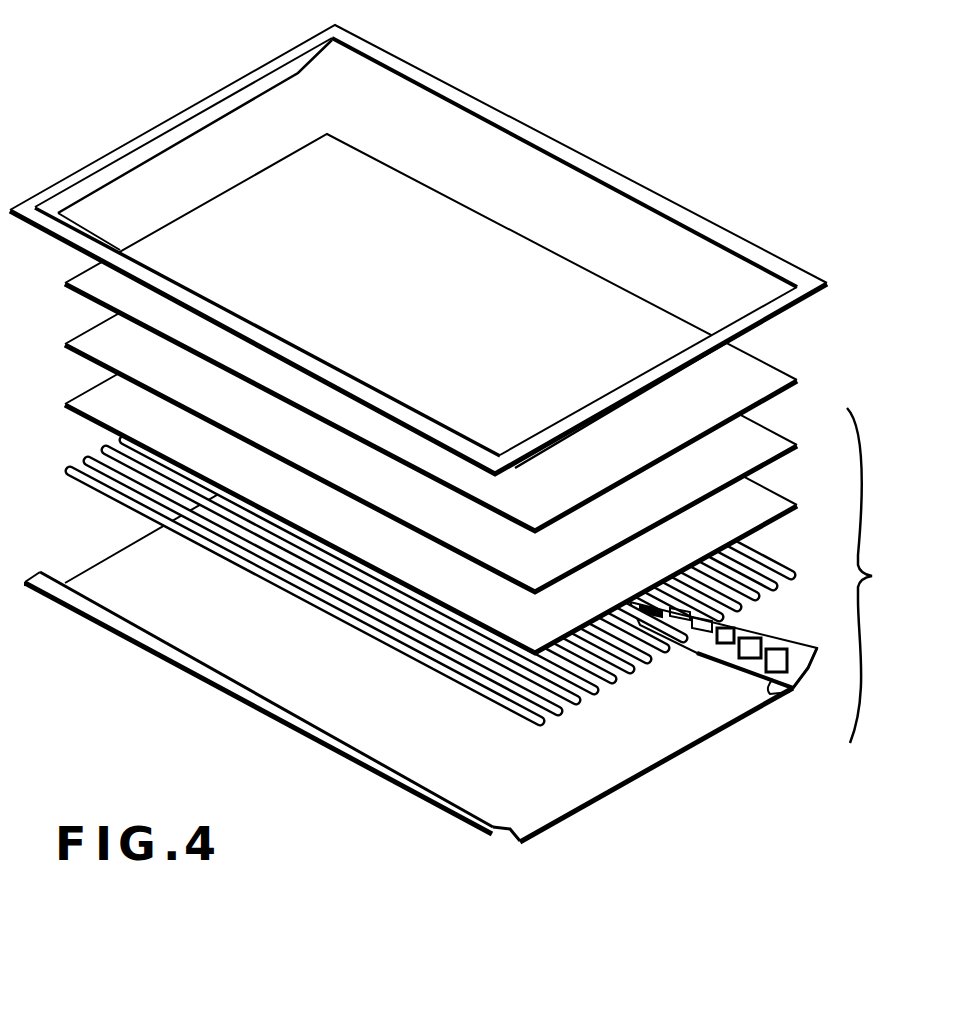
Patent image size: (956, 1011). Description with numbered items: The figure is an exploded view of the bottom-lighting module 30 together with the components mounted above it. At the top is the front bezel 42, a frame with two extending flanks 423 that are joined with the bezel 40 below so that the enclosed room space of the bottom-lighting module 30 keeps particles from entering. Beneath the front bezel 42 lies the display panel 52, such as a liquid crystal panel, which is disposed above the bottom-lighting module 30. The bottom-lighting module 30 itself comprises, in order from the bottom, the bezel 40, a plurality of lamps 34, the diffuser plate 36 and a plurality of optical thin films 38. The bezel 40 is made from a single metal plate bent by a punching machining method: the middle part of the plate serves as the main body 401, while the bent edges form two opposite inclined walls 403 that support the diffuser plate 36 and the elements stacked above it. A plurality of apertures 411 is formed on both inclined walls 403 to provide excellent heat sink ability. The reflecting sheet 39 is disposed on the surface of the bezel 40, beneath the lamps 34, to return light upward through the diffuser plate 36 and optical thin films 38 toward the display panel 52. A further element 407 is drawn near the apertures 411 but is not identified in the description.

The bottom-lighting module 30 is at (877, 575).
The lamp 34 is at (457, 523).
The diffuser plate 36 is at (776, 505).
The optical thin film 38 is at (774, 445).
The reflecting sheet 39 is at (633, 735).
The bezel 40 is at (717, 786).
The front bezel 42 is at (775, 258).
The display panel 52 is at (774, 380).
The main body 401 is at (582, 790).
The inclined wall 403 is at (257, 697).
The circuit board 407 is at (768, 622).
The aperture 411 is at (770, 676).
The extending flank 423 is at (293, 70).